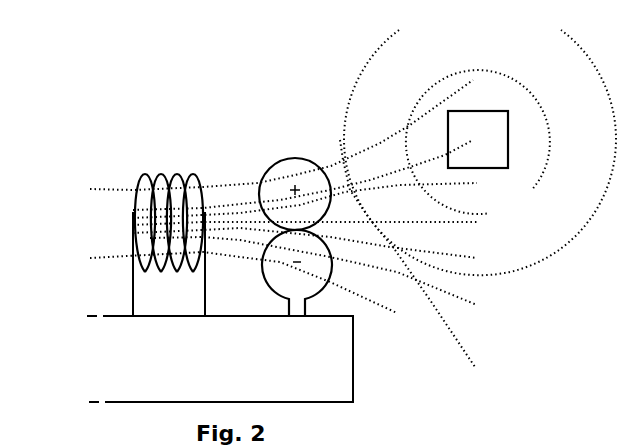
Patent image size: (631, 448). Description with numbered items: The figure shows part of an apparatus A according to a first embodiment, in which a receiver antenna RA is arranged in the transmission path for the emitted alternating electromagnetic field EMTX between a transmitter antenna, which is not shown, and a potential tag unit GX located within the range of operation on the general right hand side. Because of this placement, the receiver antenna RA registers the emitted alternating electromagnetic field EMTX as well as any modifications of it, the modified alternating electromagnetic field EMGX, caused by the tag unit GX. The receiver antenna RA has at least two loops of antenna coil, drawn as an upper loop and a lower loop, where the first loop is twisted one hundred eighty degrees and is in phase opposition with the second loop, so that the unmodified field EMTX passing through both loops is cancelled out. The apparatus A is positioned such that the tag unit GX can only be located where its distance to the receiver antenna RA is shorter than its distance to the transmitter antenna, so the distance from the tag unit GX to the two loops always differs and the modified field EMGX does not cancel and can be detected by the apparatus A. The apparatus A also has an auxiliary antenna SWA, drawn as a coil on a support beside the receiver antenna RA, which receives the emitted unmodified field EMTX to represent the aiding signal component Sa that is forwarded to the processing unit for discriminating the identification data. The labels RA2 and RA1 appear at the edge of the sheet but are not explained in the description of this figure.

The auxiliary antenna SWA is at (140, 193).
The aiding signal component Sa is at (169, 264).
The receiver antenna RA is at (272, 202).
The apparatus A is at (254, 359).
The emitted alternating electromagnetic field EMTX is at (273, 223).
The tag unit GX is at (509, 139).
The modified alternating electromagnetic field EMGX is at (480, 152).
The second receiving antenna RA2 is at (470, 430).
The first receiving antenna RA1 is at (630, 418).